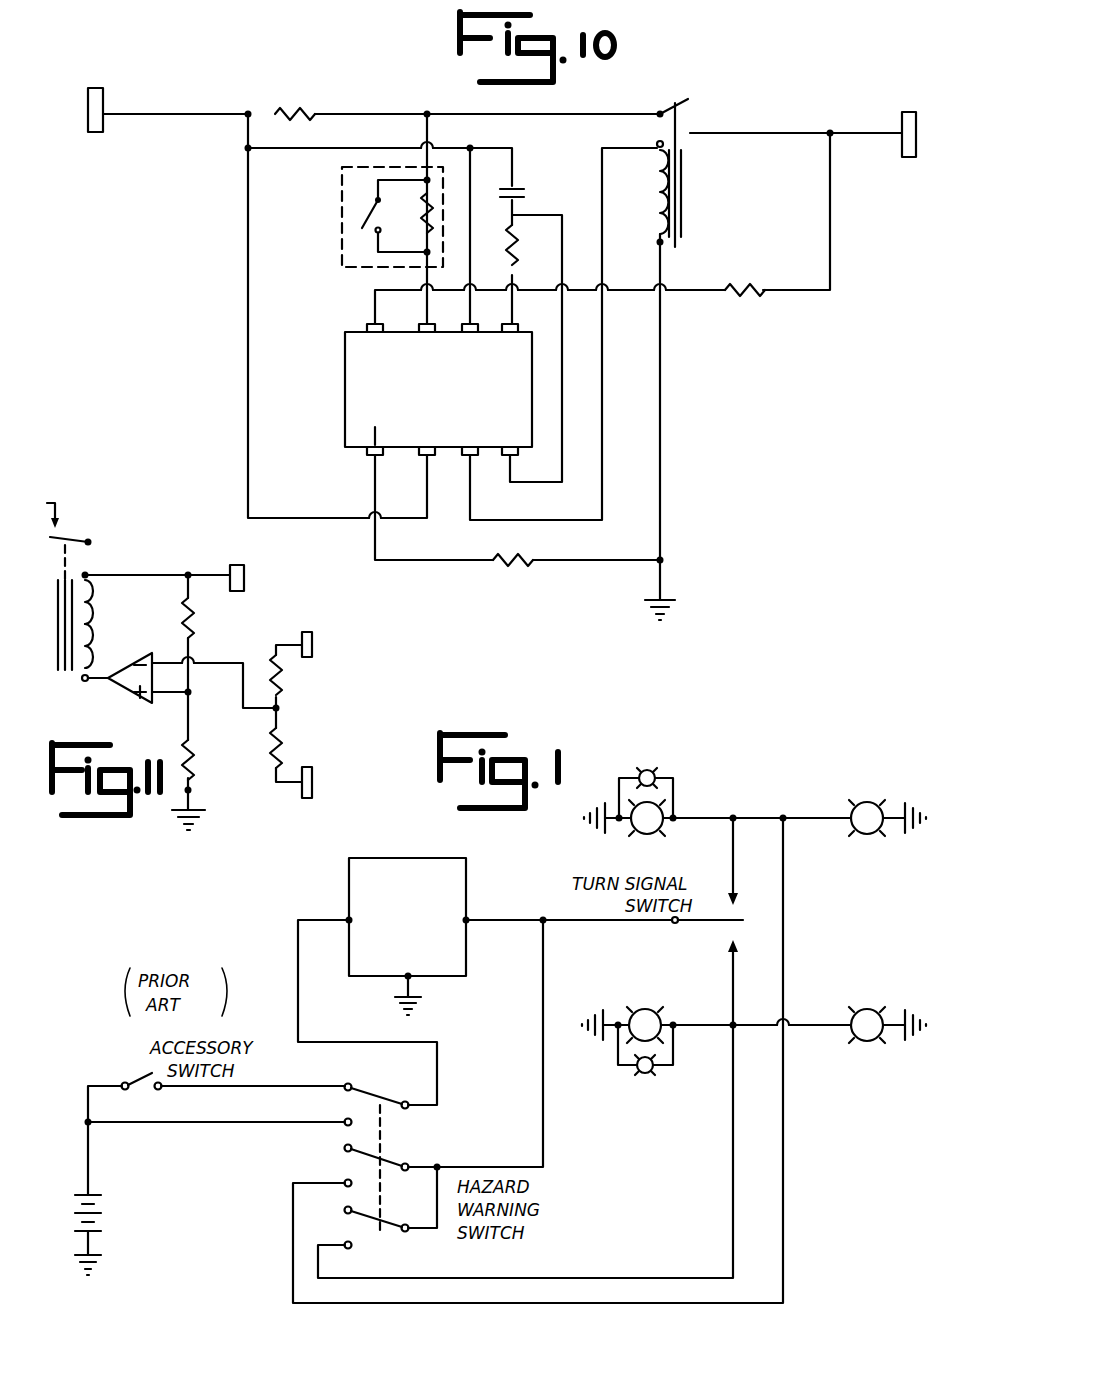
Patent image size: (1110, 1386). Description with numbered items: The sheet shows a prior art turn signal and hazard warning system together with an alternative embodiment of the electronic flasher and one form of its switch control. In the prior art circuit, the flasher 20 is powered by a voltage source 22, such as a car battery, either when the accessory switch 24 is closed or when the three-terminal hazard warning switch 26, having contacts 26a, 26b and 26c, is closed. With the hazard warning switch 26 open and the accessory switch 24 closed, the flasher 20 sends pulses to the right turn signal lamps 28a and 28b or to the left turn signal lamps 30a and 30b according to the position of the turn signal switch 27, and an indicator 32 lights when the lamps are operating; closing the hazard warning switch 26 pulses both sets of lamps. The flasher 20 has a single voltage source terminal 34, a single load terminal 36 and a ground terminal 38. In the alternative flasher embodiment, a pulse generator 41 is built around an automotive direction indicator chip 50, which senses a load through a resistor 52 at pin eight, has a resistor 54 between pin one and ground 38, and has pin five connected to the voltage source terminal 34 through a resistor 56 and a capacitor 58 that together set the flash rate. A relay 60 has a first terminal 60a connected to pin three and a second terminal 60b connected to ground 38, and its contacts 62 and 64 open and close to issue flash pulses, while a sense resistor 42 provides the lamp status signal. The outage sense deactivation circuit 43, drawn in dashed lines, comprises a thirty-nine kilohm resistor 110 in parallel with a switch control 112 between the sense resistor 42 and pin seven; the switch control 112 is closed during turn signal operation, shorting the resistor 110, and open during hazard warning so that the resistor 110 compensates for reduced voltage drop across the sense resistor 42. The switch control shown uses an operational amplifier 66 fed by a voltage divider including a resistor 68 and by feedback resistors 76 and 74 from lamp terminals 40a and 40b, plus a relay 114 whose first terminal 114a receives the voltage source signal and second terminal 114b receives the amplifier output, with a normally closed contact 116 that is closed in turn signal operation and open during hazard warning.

In FIG. 10, the voltage source terminal 34 is at (100, 90).
In FIG. 11, the voltage source terminal 34 is at (233, 565).
In FIG. 1, the voltage source terminal 34 is at (352, 918).
In FIG. 10, the load terminal 36 is at (902, 113).
In FIG. 1, the load terminal 36 is at (464, 920).
In FIG. 10, the ground terminal 38 is at (665, 560).
In FIG. 1, the ground terminal 38 is at (408, 976).
In FIG. 10, the pulse generator 41 is at (672, 410).
In FIG. 10, the sense resistor 42 is at (296, 108).
In FIG. 10, the outage sense deactivation circuit 43 is at (342, 222).
In FIG. 10, the automotive direction indicator integrated circuit chip 50 is at (438, 389).
In FIG. 10, the resistor 52 is at (748, 291).
In FIG. 10, the resistor 54 is at (519, 558).
In FIG. 10, the resistor 56 is at (514, 260).
In FIG. 10, the capacitor 58 is at (519, 192).
In FIG. 10, the relay 60 is at (687, 187).
In FIG. 10, the first terminal of relay 60a is at (657, 150).
In FIG. 10, the second terminal of relay 60b is at (657, 242).
In FIG. 10, the relay contact 62 is at (673, 163).
In FIG. 10, the relay contact 64 is at (690, 133).
In FIG. 10, the resistor 110 is at (397, 224).
In FIG. 10, the switch control 112 is at (408, 216).
In FIG. 11, the relay 114 is at (88, 618).
In FIG. 11, the first terminal of relay 114a is at (86, 582).
In FIG. 11, the second terminal of relay 114b is at (94, 676).
In FIG. 11, the normally closed contact 116 is at (79, 532).
In FIG. 11, the operational amplifier 66 is at (132, 695).
In FIG. 11, the resistor 68 is at (188, 612).
In FIG. 11, the resistor 74 is at (284, 746).
In FIG. 11, the relay 76 is at (288, 675).
In FIG. 11, the terminal 40a is at (312, 636).
In FIG. 11, the terminal 40b is at (312, 770).
In FIG. 1, the electronic turn signal-hazard warning flasher 20 is at (425, 859).
In FIG. 1, the voltage source 22 is at (100, 1211).
In FIG. 1, the accessory switch 24 is at (137, 1069).
In FIG. 1, the hazard warning switch 26 is at (428, 1149).
In FIG. 1, the contact 26a is at (390, 1220).
In FIG. 1, the contact 26b is at (390, 1157).
In FIG. 1, the contact 26c is at (368, 1095).
In FIG. 1, the turn signal switch 27 is at (722, 923).
In FIG. 1, the right turn signal lamp 28a is at (648, 835).
In FIG. 1, the right turn signal lamp 28b is at (866, 838).
In FIG. 1, the left turn signal lamp 30a is at (652, 1000).
In FIG. 1, the left turn signal lamp 30b is at (867, 1008).
In FIG. 1, the indicator 32 is at (650, 770).